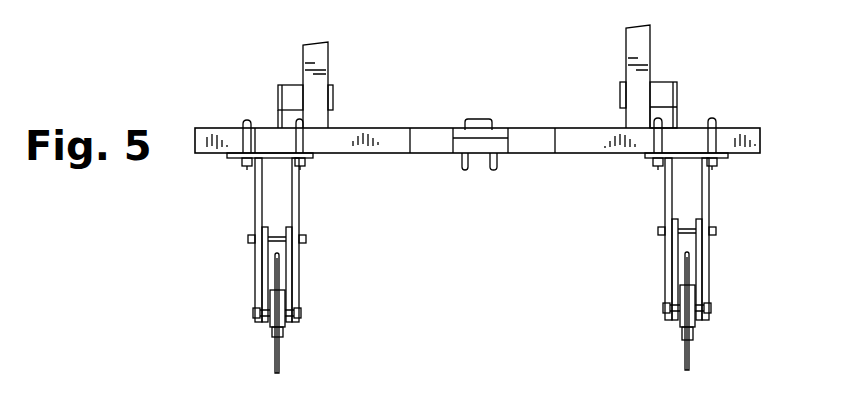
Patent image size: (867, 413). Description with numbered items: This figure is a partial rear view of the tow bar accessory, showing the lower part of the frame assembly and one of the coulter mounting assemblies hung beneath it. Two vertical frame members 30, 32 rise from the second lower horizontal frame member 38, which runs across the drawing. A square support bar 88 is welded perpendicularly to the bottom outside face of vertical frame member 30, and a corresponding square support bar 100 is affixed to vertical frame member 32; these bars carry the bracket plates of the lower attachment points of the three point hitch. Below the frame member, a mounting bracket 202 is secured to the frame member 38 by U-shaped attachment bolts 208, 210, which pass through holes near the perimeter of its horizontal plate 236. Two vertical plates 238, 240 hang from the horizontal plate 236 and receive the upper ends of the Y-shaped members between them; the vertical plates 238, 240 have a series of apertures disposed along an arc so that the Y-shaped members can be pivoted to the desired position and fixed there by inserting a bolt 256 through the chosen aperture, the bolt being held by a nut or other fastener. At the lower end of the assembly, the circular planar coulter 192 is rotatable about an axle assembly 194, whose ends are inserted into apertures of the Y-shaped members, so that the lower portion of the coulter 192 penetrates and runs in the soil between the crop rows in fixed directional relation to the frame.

The vertical frame member 30 is at (318, 55).
The vertical frame member 32 is at (642, 53).
The second lower horizontal frame member 38 is at (580, 128).
The square support bar 88 is at (293, 92).
The square support bar 100 is at (662, 90).
The coulter 192 is at (280, 352).
The axle assembly 194 is at (300, 312).
The mounting bracket 202 is at (183, 277).
The U-shaped attachment bolt 208 is at (245, 124).
The U-shaped attachment bolt 210 is at (297, 120).
The horizontal plate 236 is at (227, 158).
The vertical plate 238 is at (255, 198).
The vertical plate 240 is at (298, 190).
The bolt 256 is at (307, 239).